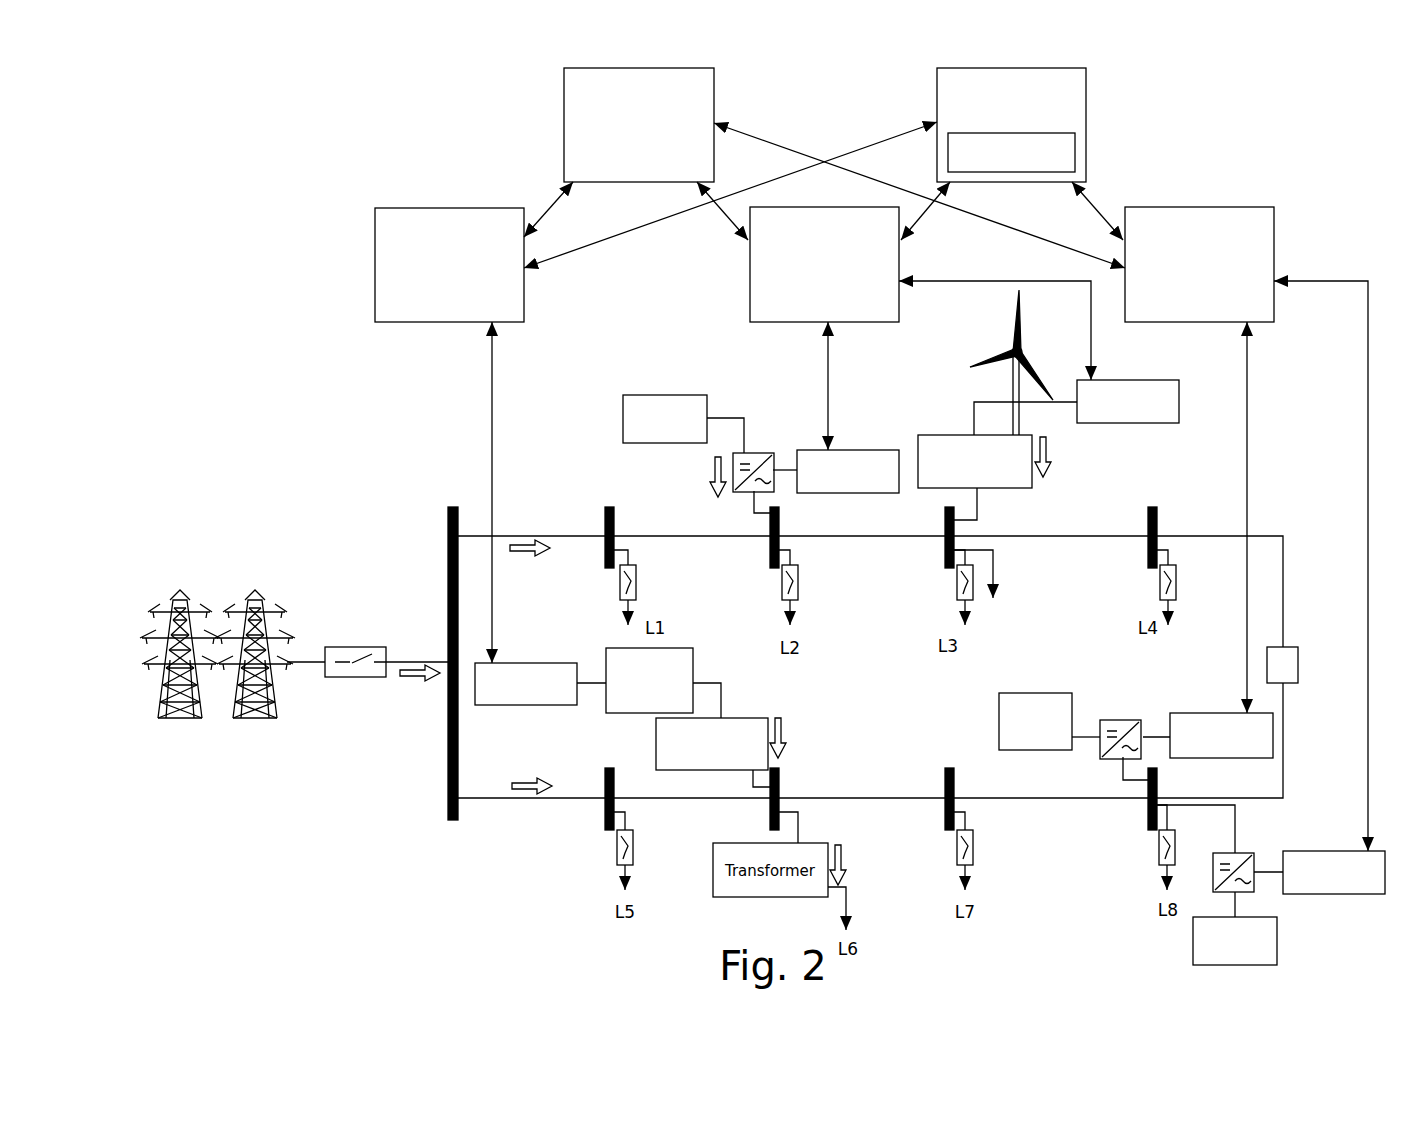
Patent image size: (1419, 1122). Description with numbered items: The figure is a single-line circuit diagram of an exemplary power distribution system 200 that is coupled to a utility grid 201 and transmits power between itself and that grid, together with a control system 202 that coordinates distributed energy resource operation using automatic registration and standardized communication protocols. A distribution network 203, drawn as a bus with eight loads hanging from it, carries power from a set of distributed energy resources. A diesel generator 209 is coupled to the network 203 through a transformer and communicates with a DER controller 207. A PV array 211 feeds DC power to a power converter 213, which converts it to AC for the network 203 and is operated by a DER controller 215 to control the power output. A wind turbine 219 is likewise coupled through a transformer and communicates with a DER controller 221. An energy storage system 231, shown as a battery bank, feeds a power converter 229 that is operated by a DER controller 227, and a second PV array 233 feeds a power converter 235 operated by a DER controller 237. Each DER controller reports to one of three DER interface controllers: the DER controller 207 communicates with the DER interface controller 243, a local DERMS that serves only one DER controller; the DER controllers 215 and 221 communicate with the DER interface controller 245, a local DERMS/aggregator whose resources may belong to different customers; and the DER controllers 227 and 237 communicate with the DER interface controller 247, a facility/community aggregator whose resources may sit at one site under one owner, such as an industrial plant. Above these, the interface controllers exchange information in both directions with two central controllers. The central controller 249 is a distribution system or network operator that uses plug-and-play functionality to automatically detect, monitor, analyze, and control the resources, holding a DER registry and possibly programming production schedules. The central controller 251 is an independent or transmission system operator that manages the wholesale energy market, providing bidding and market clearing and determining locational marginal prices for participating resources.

The power distribution system 200 is at (294, 106).
The utility grid 201 is at (219, 598).
The control system 202 is at (352, 278).
The distribution network 203 is at (448, 733).
The DER controller 207 is at (574, 664).
The diesel generator 209 is at (695, 663).
The PV array 211 is at (659, 393).
The power converter 213 is at (765, 453).
The DER controller 215 is at (880, 450).
The wind turbine 219 is at (983, 367).
The DER controller 221 is at (1168, 380).
The DER controller 227 is at (1189, 713).
The power converter 229 is at (1118, 720).
The energy storage system 231 is at (999, 708).
The PV array 233 is at (1277, 925).
The power converter 235 is at (1245, 853).
The DER controller 237 is at (1310, 851).
The DER interface controller 243 is at (399, 208).
The DER interface controller 245 is at (750, 255).
The DER interface controller 247 is at (1273, 208).
The central controller 249 is at (1088, 83).
The central controller 251 is at (563, 80).